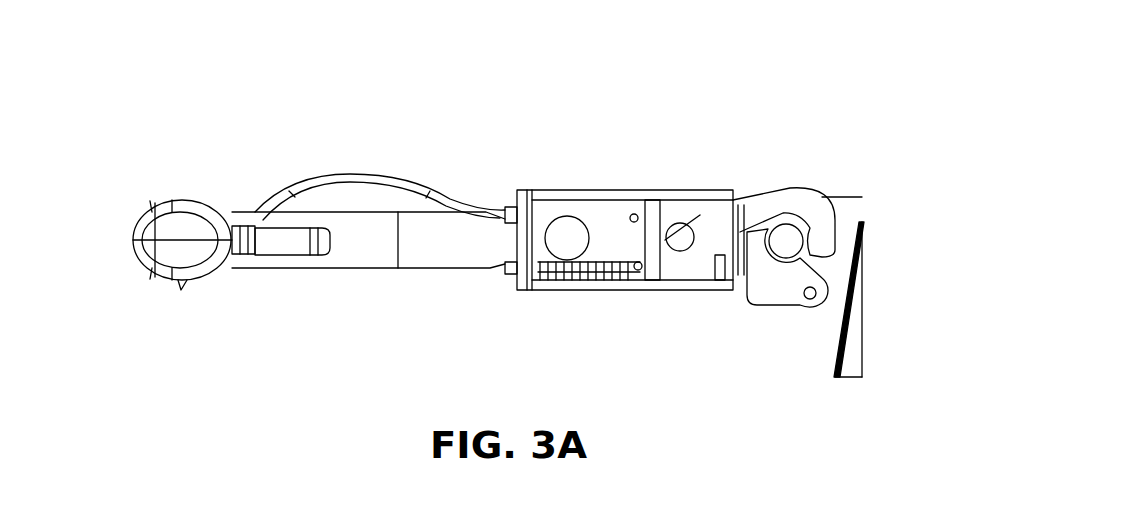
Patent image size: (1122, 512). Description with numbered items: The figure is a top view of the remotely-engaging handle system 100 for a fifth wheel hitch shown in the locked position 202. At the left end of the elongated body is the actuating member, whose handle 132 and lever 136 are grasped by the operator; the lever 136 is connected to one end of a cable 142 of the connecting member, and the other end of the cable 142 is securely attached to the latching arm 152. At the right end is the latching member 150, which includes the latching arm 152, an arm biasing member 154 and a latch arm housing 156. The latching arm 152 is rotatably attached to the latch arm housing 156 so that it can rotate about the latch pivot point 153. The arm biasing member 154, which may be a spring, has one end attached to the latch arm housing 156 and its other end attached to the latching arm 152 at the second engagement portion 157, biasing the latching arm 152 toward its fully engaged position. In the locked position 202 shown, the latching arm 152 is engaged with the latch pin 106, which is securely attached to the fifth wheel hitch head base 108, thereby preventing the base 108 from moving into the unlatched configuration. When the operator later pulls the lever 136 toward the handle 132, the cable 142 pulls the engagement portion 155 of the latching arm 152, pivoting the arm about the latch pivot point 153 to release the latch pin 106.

The remotely-engaging handle system 100 is at (168, 52).
The latch pin 106 is at (785, 243).
The fifth wheel hitch head base 108 is at (788, 297).
The handle 132 is at (160, 203).
The lever 136 is at (282, 250).
The cable 142 is at (540, 203).
The latching member 150 is at (499, 68).
The latching arm 152 is at (778, 197).
The latch pivot point 153 is at (667, 223).
The arm biasing member 154 is at (578, 259).
The engagement portion 155 is at (634, 214).
The latch arm housing 156 is at (515, 285).
The second engagement portion 157 is at (636, 272).
The locked position 202 is at (881, 52).